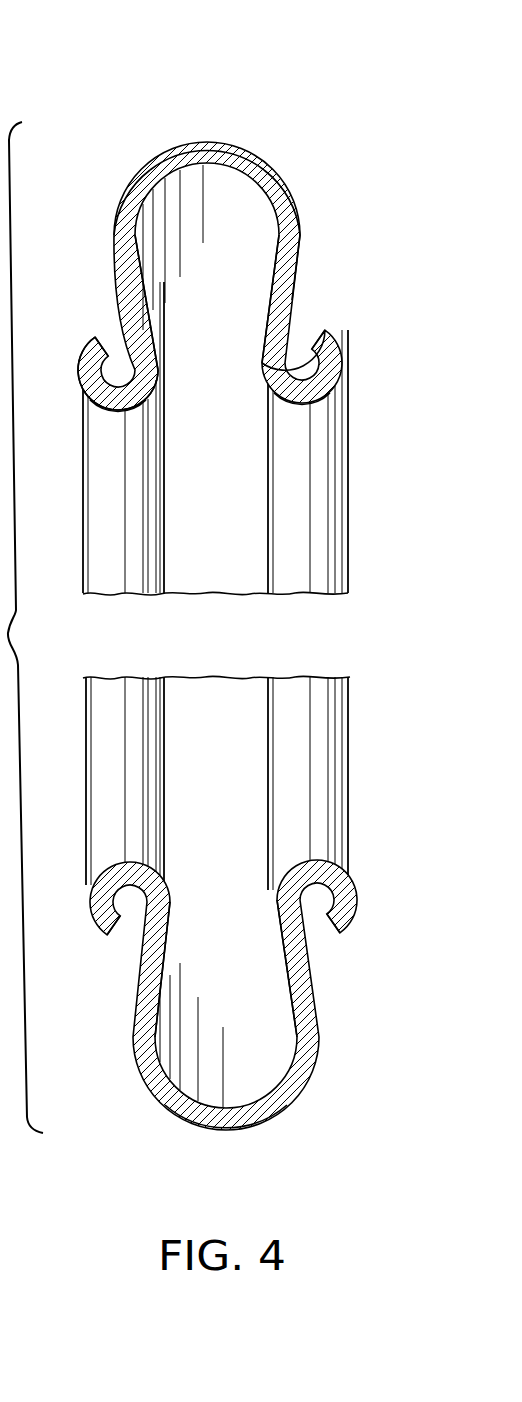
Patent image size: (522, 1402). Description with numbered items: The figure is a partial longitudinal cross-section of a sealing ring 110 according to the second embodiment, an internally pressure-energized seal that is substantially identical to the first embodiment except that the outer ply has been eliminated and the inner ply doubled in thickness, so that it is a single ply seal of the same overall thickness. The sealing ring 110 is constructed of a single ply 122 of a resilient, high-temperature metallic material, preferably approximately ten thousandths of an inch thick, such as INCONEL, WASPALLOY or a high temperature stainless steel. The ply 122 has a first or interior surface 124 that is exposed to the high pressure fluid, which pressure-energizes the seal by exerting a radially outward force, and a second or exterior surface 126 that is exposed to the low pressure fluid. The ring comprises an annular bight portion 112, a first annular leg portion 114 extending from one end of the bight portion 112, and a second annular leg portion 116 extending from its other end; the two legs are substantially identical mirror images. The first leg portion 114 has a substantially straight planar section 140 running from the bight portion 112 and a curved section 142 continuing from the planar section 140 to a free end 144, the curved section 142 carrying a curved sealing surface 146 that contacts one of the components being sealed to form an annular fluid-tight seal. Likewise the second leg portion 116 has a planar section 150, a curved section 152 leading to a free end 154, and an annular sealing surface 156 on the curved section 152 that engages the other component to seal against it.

The sealing ring 110 is at (272, 138).
The annular bight portion 112 is at (185, 142).
The first annular leg portion 114 is at (88, 480).
The second annular leg portion 116 is at (345, 455).
The ply 122 is at (127, 178).
The interior surface 124 is at (272, 215).
The exterior surface 126 is at (293, 193).
The planar section 140 is at (148, 300).
The curved section 142 is at (112, 412).
The free end 144 is at (100, 337).
The curved sealing surface 146 is at (80, 374).
The planar section 150 is at (267, 333).
The curved section 152 is at (300, 407).
The free end 154 is at (318, 338).
The annular sealing surface 156 is at (343, 358).